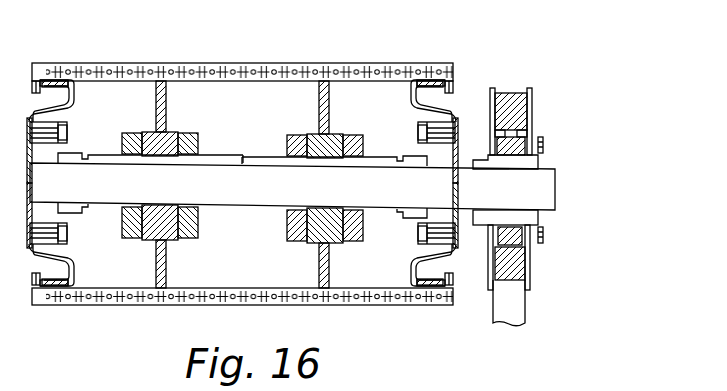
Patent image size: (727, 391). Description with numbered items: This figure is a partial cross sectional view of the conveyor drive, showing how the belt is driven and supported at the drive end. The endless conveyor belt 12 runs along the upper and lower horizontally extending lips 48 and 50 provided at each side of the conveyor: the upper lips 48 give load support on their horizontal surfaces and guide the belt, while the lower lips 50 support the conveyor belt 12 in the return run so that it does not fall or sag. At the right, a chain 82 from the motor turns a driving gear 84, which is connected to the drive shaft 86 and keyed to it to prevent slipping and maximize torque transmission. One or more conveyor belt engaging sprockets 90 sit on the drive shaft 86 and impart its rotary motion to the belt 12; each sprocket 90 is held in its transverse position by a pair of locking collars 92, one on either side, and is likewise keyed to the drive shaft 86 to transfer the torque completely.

The endless conveyor belt 12 is at (200, 63).
The upper horizontally extending lip 48 is at (70, 86).
The lower horizontally extending lip 50 is at (70, 267).
The chain 82 is at (527, 300).
The driving gear 84 is at (532, 110).
The drive shaft 86 is at (557, 184).
The conveyor belt engaging sprocket 90 is at (317, 259).
The locking collar 92 is at (123, 135).